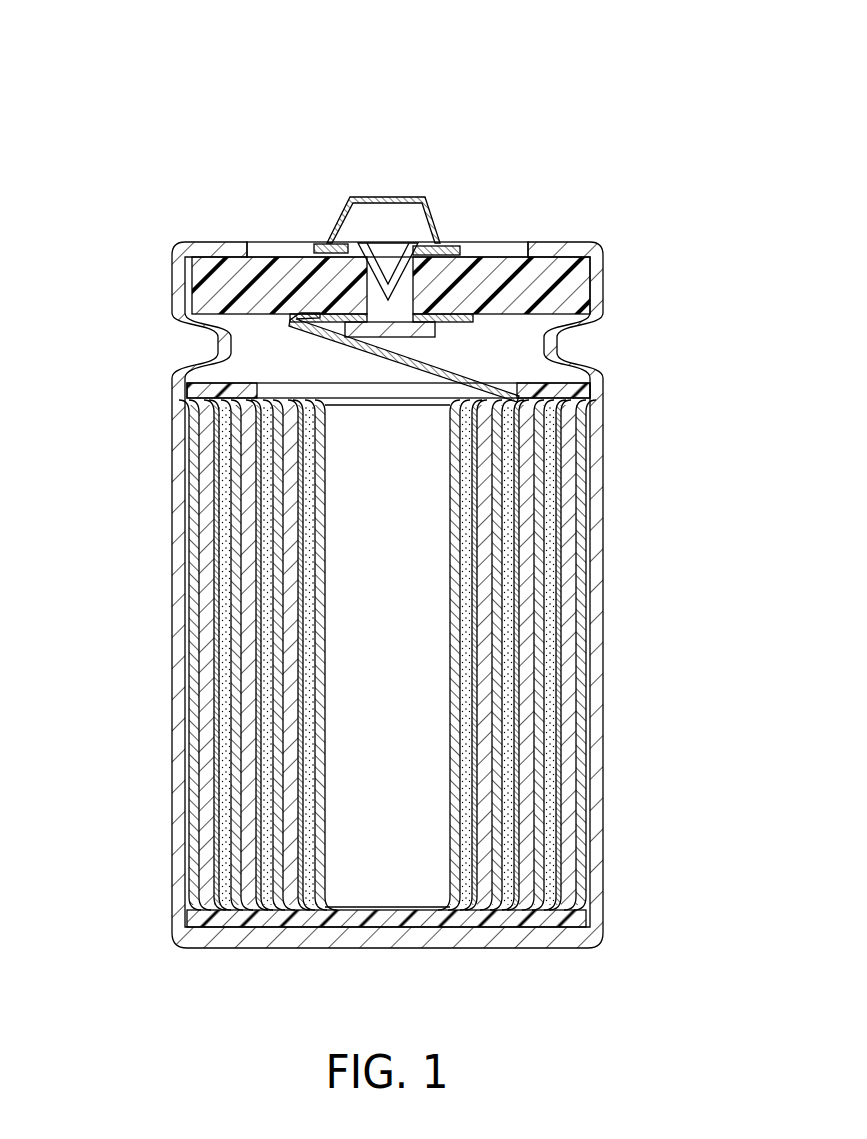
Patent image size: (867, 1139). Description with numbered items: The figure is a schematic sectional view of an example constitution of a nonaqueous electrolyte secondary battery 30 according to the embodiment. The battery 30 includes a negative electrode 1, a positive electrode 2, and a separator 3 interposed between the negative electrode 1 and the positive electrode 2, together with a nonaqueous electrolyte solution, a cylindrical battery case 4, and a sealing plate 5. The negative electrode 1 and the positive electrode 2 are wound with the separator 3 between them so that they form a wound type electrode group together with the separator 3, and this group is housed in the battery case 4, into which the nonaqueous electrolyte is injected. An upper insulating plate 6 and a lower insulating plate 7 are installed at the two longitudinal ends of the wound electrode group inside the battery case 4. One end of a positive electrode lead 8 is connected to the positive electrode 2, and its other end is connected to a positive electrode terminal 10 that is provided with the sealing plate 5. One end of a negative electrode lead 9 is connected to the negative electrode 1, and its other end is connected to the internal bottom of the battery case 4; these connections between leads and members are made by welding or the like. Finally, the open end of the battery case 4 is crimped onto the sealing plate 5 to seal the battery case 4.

The negative electrode 1 is at (208, 545).
The positive electrode 2 is at (218, 627).
The separator 3 is at (222, 678).
The battery case 4 is at (603, 705).
The sealing plate 5 is at (495, 257).
The upper insulating plate 6 is at (538, 383).
The lower insulating plate 7 is at (530, 930).
The positive electrode lead 8 is at (375, 390).
The negative electrode lead 9 is at (198, 502).
The positive electrode terminal 10 is at (390, 193).
The nonaqueous electrolyte secondary battery 30 is at (415, 68).